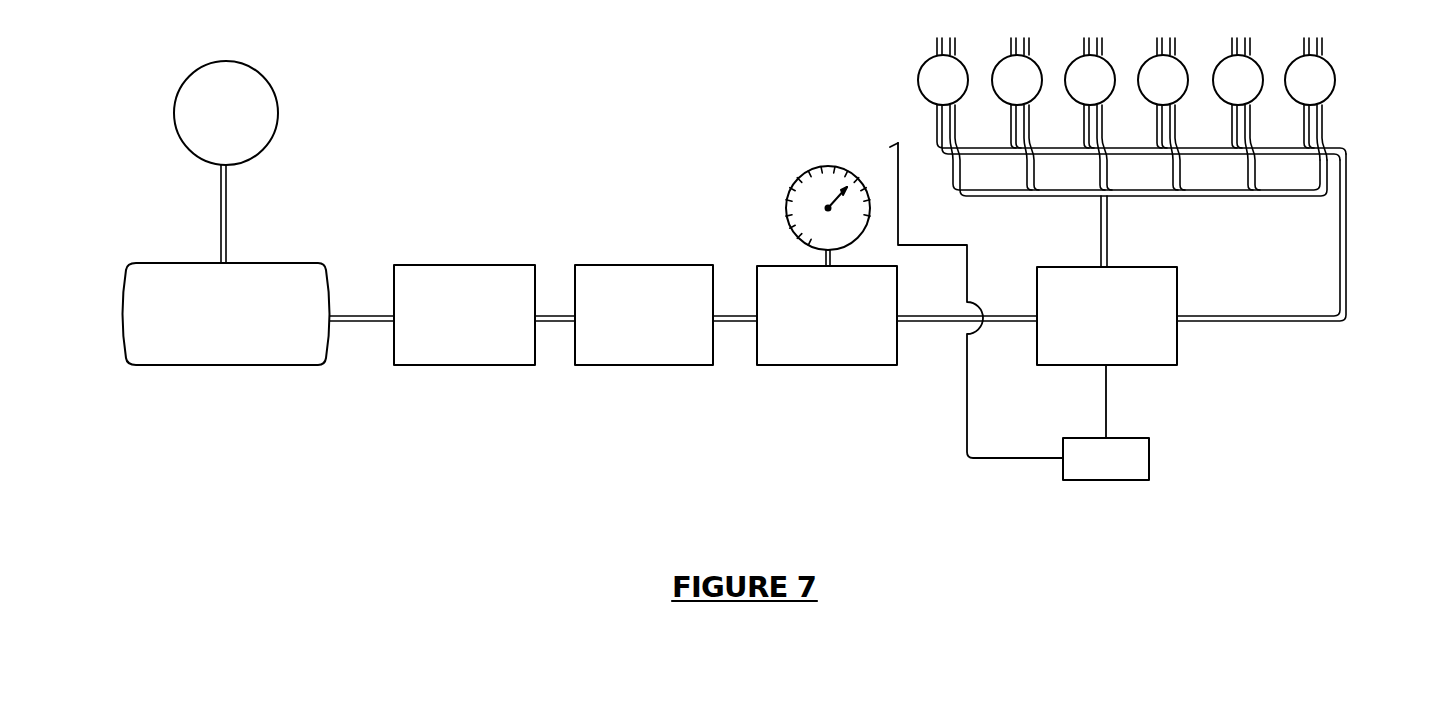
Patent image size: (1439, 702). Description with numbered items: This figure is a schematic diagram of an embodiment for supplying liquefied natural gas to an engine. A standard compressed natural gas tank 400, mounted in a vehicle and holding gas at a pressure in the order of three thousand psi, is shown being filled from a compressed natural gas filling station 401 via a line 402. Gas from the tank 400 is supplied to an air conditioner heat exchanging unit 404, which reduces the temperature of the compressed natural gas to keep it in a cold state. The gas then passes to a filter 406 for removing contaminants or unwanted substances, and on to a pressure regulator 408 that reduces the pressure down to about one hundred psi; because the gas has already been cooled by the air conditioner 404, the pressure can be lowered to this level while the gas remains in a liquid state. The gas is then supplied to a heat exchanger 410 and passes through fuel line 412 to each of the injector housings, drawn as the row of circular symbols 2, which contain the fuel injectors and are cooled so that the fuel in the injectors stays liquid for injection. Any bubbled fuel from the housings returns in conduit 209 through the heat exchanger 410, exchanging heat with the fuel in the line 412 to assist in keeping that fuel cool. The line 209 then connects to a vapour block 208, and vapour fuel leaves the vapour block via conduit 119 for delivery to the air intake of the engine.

The nozzle 2 is at (1317, 93).
The conduit 119 is at (970, 272).
The vapour block 208 is at (1087, 471).
The conduit 209 is at (1109, 240).
The compressed natural gas tank 400 is at (210, 323).
The compressed natural gas filling station 401 is at (244, 128).
The line 402 is at (221, 216).
The air conditioner heat exchanging unit 404 is at (449, 318).
The filter 406 is at (628, 318).
The pressure regulator 408 is at (799, 320).
The heat exchanger 410 is at (1083, 325).
The fuel line 412 is at (1347, 245).